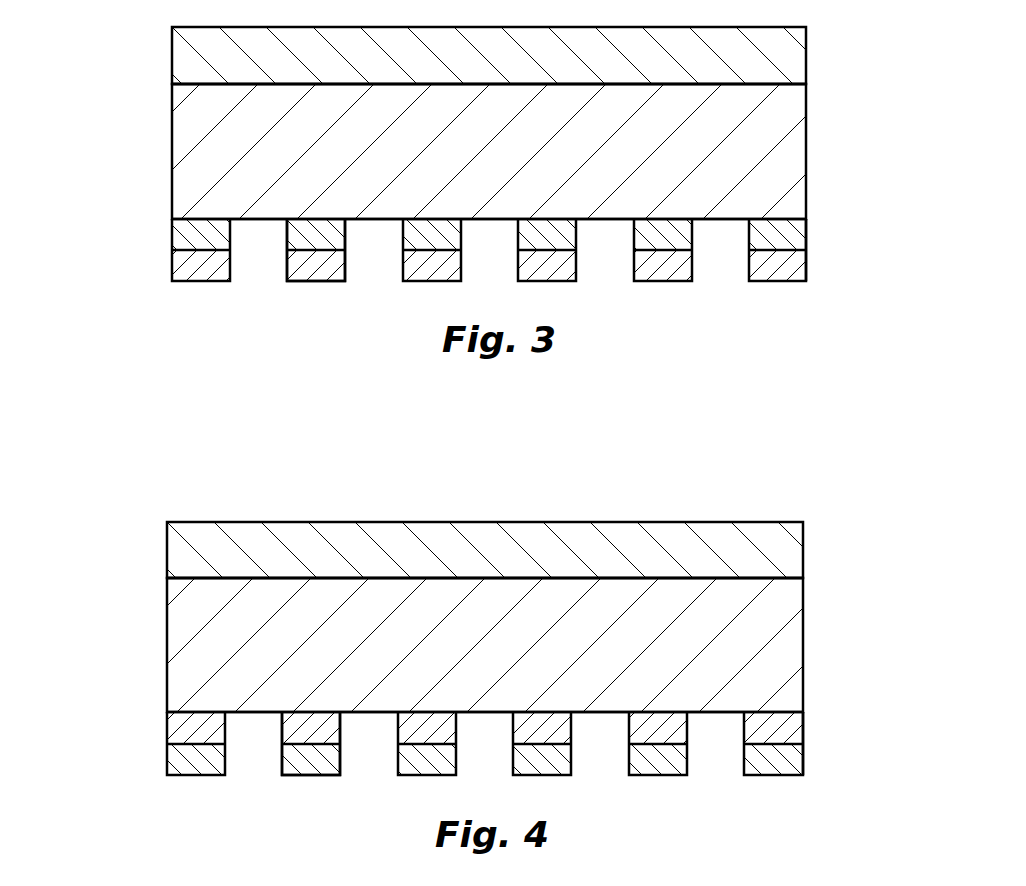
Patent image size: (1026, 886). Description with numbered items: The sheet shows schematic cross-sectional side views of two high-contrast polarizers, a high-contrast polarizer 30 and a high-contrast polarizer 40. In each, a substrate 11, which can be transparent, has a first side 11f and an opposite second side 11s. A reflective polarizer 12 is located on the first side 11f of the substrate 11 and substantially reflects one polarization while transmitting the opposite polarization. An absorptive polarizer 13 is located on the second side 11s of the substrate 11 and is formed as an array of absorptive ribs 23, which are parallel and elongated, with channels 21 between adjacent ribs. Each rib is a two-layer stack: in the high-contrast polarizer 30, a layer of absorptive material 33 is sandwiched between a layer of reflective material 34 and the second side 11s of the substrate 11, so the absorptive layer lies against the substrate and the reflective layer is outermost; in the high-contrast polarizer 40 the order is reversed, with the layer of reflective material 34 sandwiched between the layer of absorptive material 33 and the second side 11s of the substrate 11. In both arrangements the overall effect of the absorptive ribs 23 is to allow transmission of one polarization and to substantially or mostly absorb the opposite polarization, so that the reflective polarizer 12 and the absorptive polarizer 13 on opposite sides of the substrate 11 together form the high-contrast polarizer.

In FIG. 3, the high-contrast polarizer 30 is at (92, 98).
In FIG. 4, the high-contrast polarizer 40 is at (82, 591).
In FIG. 3, the reflective polarizer 12 is at (500, 68).
In FIG. 4, the reflective polarizer 12 is at (495, 560).
In FIG. 3, the substrate 11 is at (500, 160).
In FIG. 4, the substrate 11 is at (495, 652).
In FIG. 3, the first side 11f is at (751, 86).
In FIG. 4, the first side 11f is at (743, 582).
In FIG. 3, the second side 11s is at (718, 219).
In FIG. 4, the second side 11s is at (712, 708).
In FIG. 3, the channels 21 is at (434, 256).
In FIG. 4, the channels 21 is at (428, 748).
In FIG. 3, the array of absorptive ribs 23 is at (315, 312).
In FIG. 4, the array of absorptive ribs 23 is at (310, 807).
In FIG. 3, the layer of absorptive material 33 is at (145, 232).
In FIG. 4, the layer of absorptive material 33 is at (139, 762).
In FIG. 3, the layer of reflective material 34 is at (145, 268).
In FIG. 4, the layer of reflective material 34 is at (139, 727).
In FIG. 3, the absorptive polarizer 13 is at (862, 249).
In FIG. 4, the absorptive polarizer 13 is at (859, 743).